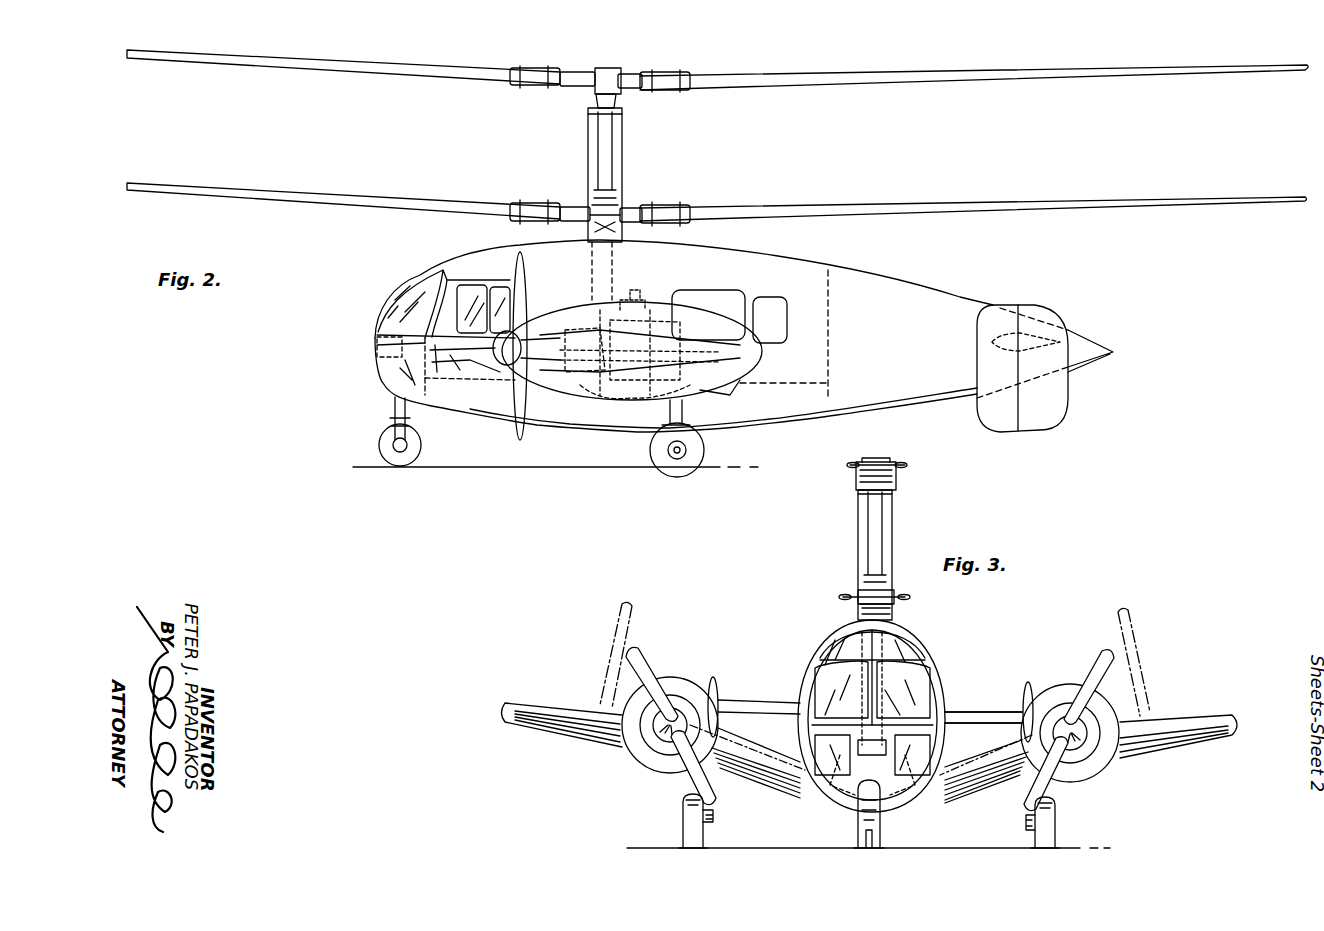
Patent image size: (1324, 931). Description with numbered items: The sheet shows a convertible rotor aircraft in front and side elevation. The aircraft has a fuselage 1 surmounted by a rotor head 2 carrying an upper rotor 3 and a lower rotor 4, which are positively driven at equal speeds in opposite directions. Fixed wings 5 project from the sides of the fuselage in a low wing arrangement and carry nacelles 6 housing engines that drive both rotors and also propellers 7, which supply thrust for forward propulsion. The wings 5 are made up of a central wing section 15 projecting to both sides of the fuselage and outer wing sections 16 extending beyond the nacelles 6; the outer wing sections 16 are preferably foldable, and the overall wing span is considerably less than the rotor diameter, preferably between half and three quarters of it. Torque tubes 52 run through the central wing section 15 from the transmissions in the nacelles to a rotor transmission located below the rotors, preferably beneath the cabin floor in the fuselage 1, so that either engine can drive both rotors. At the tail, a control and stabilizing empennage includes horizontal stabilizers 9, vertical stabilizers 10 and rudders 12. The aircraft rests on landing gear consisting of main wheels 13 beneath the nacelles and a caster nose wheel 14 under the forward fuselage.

In FIG. 2, the fuselage 1 is at (471, 256).
In FIG. 3, the fuselage 1 is at (940, 640).
In FIG. 2, the rotor head 2 is at (636, 150).
In FIG. 3, the rotor head 2 is at (893, 525).
In FIG. 2, the upper rotor 3 is at (880, 83).
In FIG. 3, the upper rotor 3 is at (896, 465).
In FIG. 2, the lower rotor 4 is at (876, 205).
In FIG. 3, the lower rotor 4 is at (896, 597).
In FIG. 3, the fixed wings 5 is at (785, 799).
In FIG. 2, the nacelles 6 is at (662, 302).
In FIG. 3, the nacelles 6 is at (1068, 685).
In FIG. 2, the propellers 7 is at (529, 290).
In FIG. 3, the propellers 7 is at (1101, 670).
In FIG. 3, the horizontal stabilizers 9 is at (963, 710).
In FIG. 2, the vertical stabilizers 10 is at (977, 365).
In FIG. 3, the vertical stabilizers 10 is at (1028, 688).
In FIG. 2, the rudders 12 is at (1068, 393).
In FIG. 2, the main wheels 13 is at (706, 455).
In FIG. 3, the main wheels 13 is at (1050, 830).
In FIG. 2, the caster nose wheel 14 is at (423, 446).
In FIG. 3, the caster nose wheel 14 is at (882, 840).
In FIG. 3, the central wing section 15 is at (756, 766).
In FIG. 2, the outer wing sections 16 is at (581, 338).
In FIG. 3, the outer wing sections 16 is at (1181, 715).
In FIG. 3, the torque tubes 52 is at (965, 765).